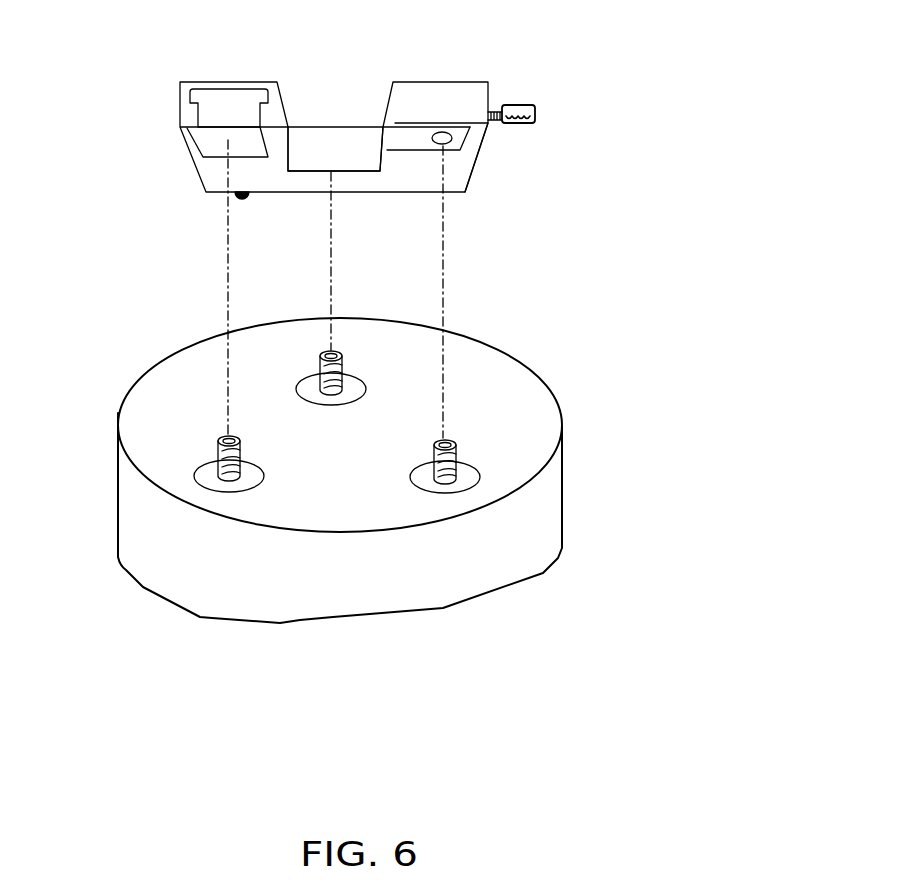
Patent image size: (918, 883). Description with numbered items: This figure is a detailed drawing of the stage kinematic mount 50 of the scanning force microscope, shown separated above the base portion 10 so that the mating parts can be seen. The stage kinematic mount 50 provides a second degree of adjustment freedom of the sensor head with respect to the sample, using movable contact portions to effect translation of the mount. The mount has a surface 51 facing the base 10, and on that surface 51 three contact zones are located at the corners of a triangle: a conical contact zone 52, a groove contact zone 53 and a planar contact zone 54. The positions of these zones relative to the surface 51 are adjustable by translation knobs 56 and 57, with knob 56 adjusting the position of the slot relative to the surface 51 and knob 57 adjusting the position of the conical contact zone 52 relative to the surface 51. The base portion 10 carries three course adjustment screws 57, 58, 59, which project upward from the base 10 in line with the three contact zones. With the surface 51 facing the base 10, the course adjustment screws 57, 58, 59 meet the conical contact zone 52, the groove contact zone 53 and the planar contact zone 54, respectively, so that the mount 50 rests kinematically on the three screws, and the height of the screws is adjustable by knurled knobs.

The base portion 10 is at (722, 302).
The stage kinematic mount 50 is at (339, 134).
The surface 51 is at (458, 162).
The conical contact zone 52 is at (456, 122).
The groove contact zone 53 is at (223, 143).
The planar contact zone 54 is at (343, 170).
The translation knob 56 is at (233, 205).
The translation knob / course adjustment screw 57 is at (525, 90).
The course adjustment screw 58 is at (208, 445).
The course adjustment screw 59 is at (317, 350).